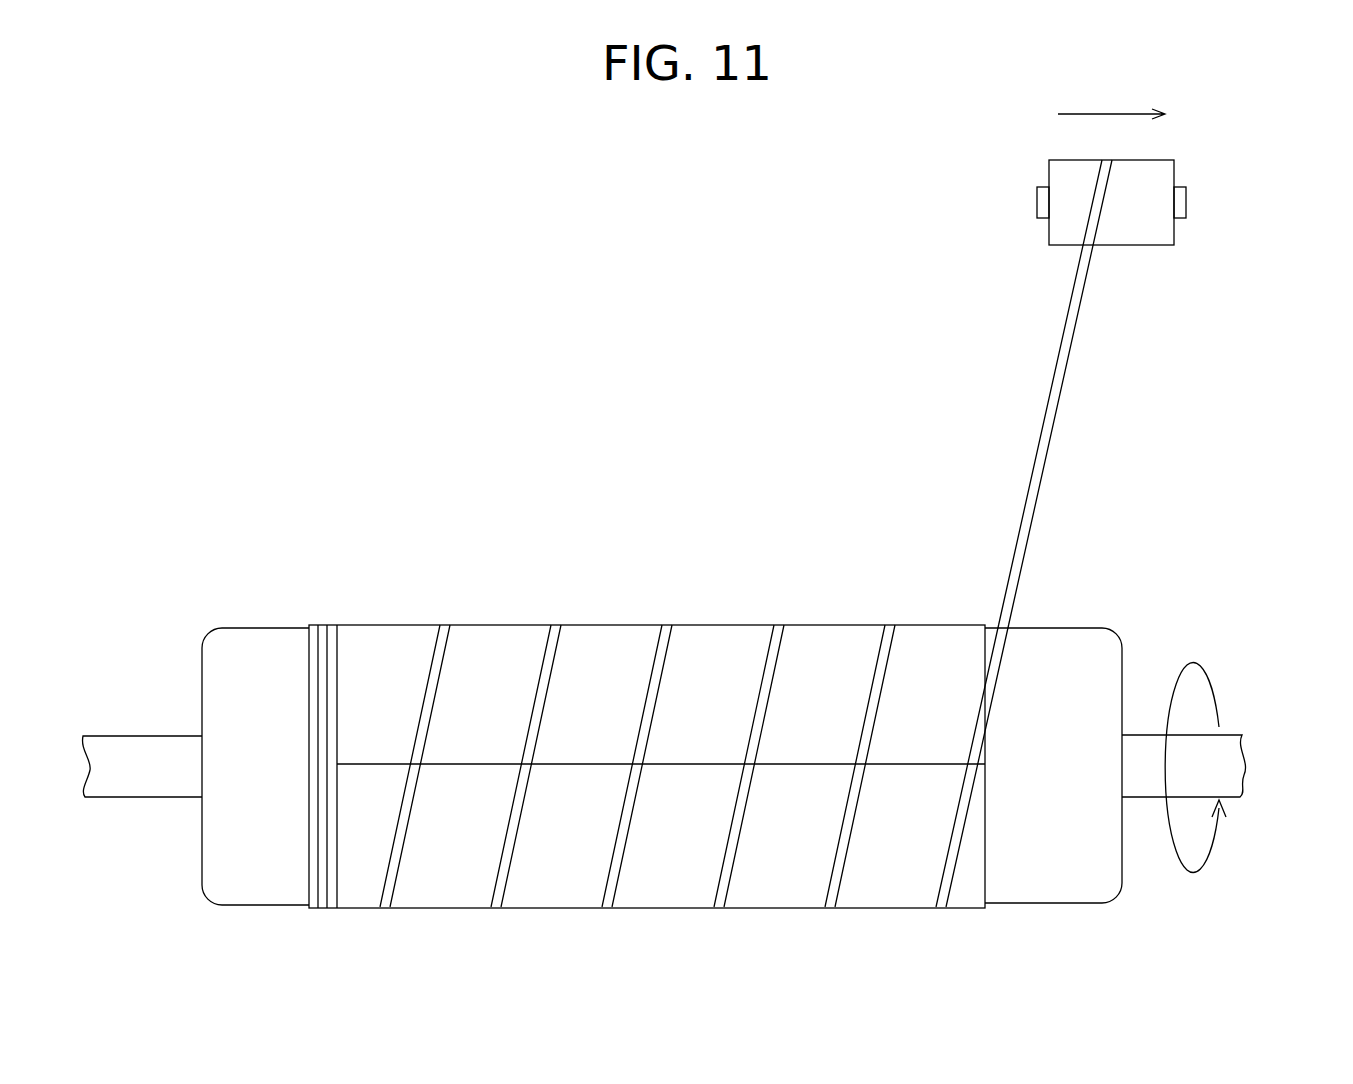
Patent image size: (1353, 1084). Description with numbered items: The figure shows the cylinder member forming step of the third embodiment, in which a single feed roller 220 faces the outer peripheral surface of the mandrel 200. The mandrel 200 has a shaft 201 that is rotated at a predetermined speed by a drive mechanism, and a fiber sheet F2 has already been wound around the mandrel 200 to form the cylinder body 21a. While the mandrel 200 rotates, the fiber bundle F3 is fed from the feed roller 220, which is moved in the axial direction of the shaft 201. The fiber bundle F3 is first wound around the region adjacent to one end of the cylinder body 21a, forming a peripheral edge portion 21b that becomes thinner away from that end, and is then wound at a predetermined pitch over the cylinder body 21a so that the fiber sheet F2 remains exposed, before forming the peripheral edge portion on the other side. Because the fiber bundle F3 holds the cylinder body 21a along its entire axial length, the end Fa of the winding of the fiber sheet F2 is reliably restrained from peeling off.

The mandrel 200 is at (1108, 667).
The shaft 201 is at (1205, 775).
The feed roller 220 is at (1187, 203).
The cylinder body 21a is at (722, 638).
The peripheral edge portion 21b is at (326, 633).
The fiber sheet F2 is at (937, 638).
The fiber bundle F3 is at (1060, 386).
The end of the winding of the fiber sheet Fa is at (580, 764).